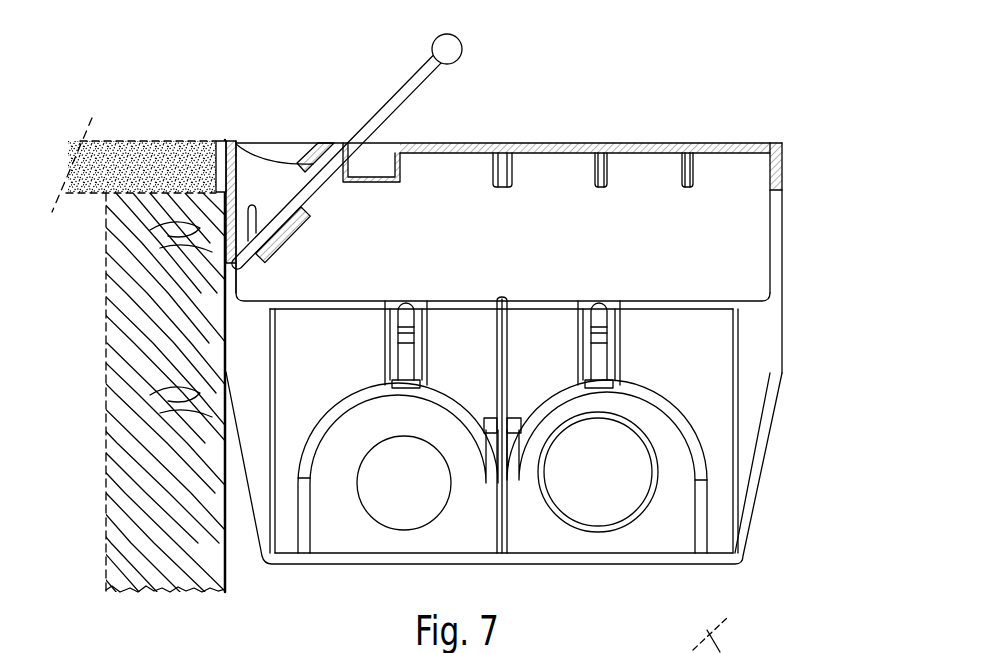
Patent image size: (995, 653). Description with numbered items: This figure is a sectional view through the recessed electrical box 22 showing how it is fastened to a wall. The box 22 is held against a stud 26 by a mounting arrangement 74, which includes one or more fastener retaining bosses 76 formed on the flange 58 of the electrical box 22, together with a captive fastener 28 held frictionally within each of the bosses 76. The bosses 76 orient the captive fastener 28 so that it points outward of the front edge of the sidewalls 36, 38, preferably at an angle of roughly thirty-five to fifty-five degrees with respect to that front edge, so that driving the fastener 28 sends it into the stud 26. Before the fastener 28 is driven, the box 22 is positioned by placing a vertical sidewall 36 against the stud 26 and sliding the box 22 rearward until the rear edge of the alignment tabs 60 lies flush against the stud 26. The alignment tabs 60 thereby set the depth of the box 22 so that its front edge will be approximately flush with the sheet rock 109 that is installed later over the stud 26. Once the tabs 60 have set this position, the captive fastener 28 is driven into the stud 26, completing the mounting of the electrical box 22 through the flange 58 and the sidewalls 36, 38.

The electrical box 22 is at (772, 522).
The stud 26 is at (197, 572).
The captive fastener 28 is at (397, 103).
The sidewall 36 is at (438, 152).
The sidewall 38 is at (235, 183).
The flange 58 is at (557, 150).
The alignment tab 60 is at (223, 166).
The mounting arrangement 74 is at (377, 149).
The fastener retaining boss 76 is at (233, 139).
The sheet rock 109 is at (134, 187).